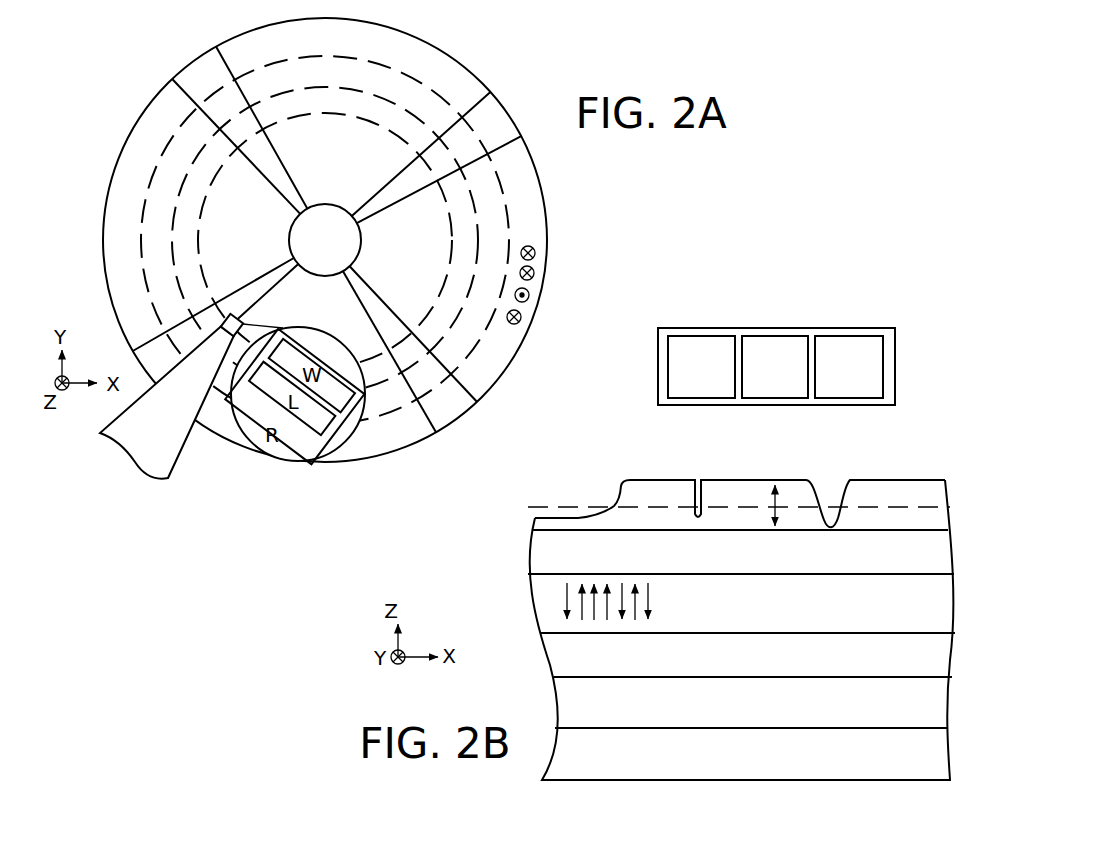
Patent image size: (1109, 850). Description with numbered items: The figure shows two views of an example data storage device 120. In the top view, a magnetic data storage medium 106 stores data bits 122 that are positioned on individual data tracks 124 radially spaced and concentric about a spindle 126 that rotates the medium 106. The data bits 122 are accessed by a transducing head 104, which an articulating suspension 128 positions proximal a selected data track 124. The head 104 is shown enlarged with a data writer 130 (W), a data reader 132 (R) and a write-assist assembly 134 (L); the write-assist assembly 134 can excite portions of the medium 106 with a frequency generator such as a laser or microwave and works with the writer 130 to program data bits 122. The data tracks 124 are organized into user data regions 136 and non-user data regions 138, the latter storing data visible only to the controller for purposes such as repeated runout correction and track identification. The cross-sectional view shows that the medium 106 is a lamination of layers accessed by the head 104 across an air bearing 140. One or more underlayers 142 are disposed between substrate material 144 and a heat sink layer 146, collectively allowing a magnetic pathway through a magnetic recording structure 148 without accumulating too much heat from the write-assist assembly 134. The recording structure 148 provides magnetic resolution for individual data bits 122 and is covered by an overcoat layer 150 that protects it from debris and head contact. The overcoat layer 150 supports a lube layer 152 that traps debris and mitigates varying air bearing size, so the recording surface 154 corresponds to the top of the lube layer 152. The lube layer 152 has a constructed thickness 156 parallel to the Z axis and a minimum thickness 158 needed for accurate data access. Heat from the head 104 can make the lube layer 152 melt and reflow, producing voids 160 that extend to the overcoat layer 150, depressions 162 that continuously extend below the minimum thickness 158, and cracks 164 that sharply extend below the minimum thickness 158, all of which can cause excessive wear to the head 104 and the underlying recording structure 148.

In FIG. 2A, the transducing head 104 is at (226, 333).
In FIG. 2B, the transducing head 104 is at (776, 350).
In FIG. 2A, the magnetic data storage medium 106 is at (512, 364).
In FIG. 2B, the magnetic data storage medium 106 is at (519, 571).
In FIG. 2A, the data storage device 120 is at (138, 46).
In FIG. 2B, the data storage device 120 is at (897, 270).
In FIG. 2A, the data bits 122 is at (548, 261).
In FIG. 2B, the data bits 122 is at (559, 605).
In FIG. 2A, the data tracks 124 is at (148, 190).
In FIG. 2A, the spindle 126 is at (325, 240).
In FIG. 2A, the articulating suspension 128 is at (167, 403).
In FIG. 2A, the data writer 130 is at (289, 350).
In FIG. 2B, the data writer 130 is at (701, 367).
In FIG. 2A, the data reader 132 is at (290, 463).
In FIG. 2B, the data reader 132 is at (849, 367).
In FIG. 2A, the write-assist assembly 134 is at (326, 432).
In FIG. 2B, the write-assist assembly 134 is at (775, 367).
In FIG. 2A, the user data regions 136 is at (463, 70).
In FIG. 2A, the non-user data regions 138 is at (226, 66).
In FIG. 2B, the air bearing 140 is at (704, 589).
In FIG. 2B, the underlayers 142 is at (751, 709).
In FIG. 2B, the substrate material 144 is at (810, 753).
In FIG. 2B, the heat sink layer 146 is at (752, 659).
In FIG. 2B, the magnetic recording structure 148 is at (748, 605).
In FIG. 2B, the overcoat layer 150 is at (741, 552).
In FIG. 2B, the lube layer 152 is at (908, 480).
In FIG. 2B, the recording surface 154 is at (657, 478).
In FIG. 2B, the constructed thickness 156 is at (776, 492).
In FIG. 2B, the minimum thickness 158 is at (521, 509).
In FIG. 2B, the lube layer voids 160 is at (840, 484).
In FIG. 2B, the depressions 162 is at (575, 496).
In FIG. 2B, the cracks 164 is at (701, 478).